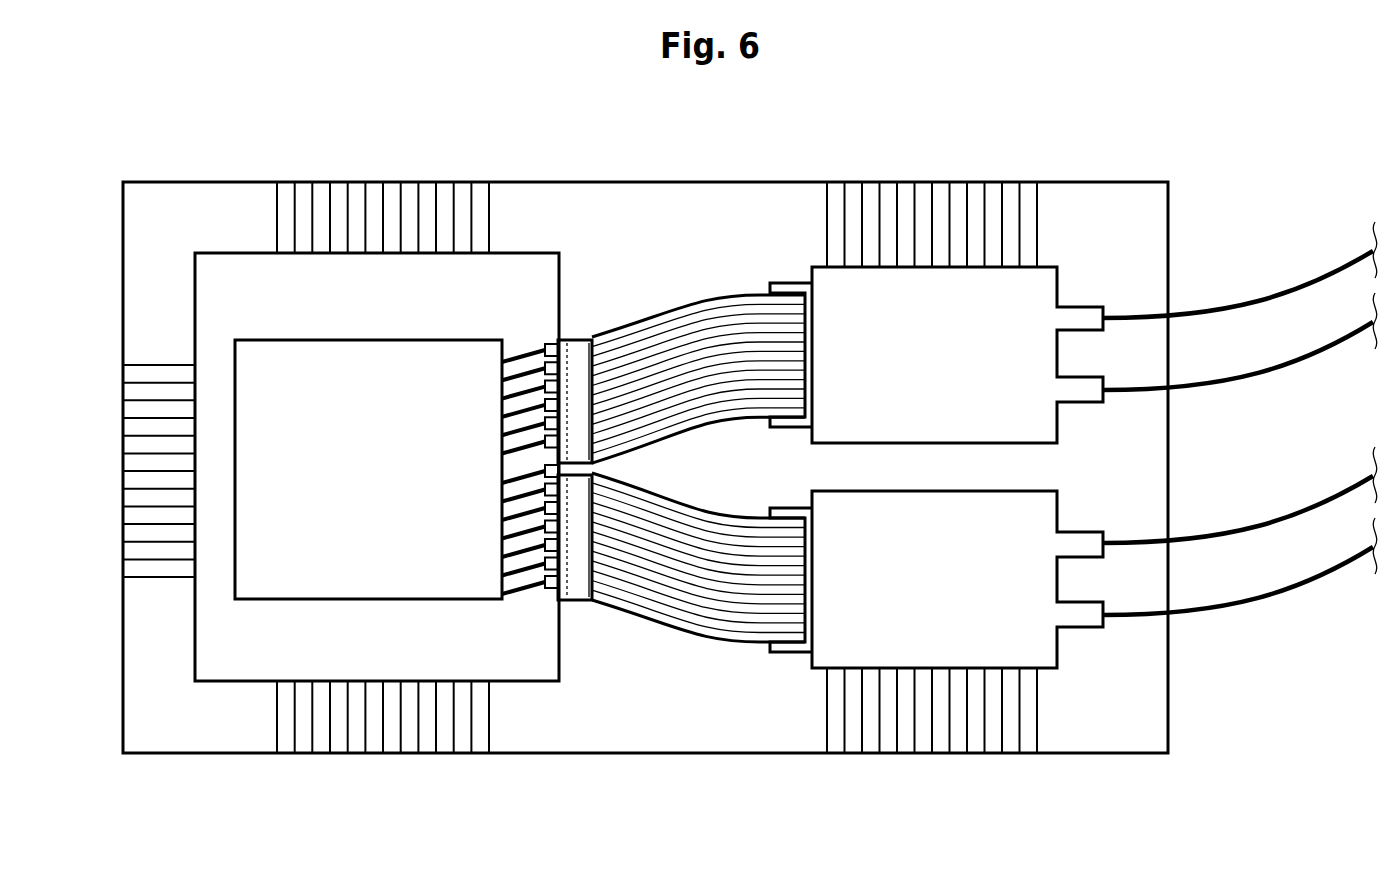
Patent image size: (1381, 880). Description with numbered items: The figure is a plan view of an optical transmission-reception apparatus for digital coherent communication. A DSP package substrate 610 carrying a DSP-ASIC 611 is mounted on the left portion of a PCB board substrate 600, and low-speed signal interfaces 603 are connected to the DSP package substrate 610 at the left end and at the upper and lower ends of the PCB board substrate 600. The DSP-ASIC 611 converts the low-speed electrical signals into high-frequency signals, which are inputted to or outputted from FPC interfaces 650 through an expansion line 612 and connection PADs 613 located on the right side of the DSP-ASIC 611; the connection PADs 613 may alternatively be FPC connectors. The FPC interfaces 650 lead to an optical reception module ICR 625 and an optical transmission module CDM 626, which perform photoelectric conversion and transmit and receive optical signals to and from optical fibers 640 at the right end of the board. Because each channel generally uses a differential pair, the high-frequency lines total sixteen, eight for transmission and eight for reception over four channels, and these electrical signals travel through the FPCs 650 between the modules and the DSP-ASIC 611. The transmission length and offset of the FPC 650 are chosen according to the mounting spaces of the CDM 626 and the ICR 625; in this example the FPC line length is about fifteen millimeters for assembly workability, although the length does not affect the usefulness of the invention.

The PCB board substrate 600 is at (743, 182).
The low-speed signal interfaces 603 is at (497, 170).
The DSP package substrate 610 is at (210, 681).
The DSP-ASIC 611 is at (263, 599).
The expansion line 612 is at (522, 345).
The connection PADs 613 is at (550, 338).
The optical reception module ICR 625 is at (1057, 270).
The optical transmission module CDM 626 is at (1057, 643).
The optical fibers 640 is at (1260, 298).
The FPC interfaces 650 is at (676, 308).